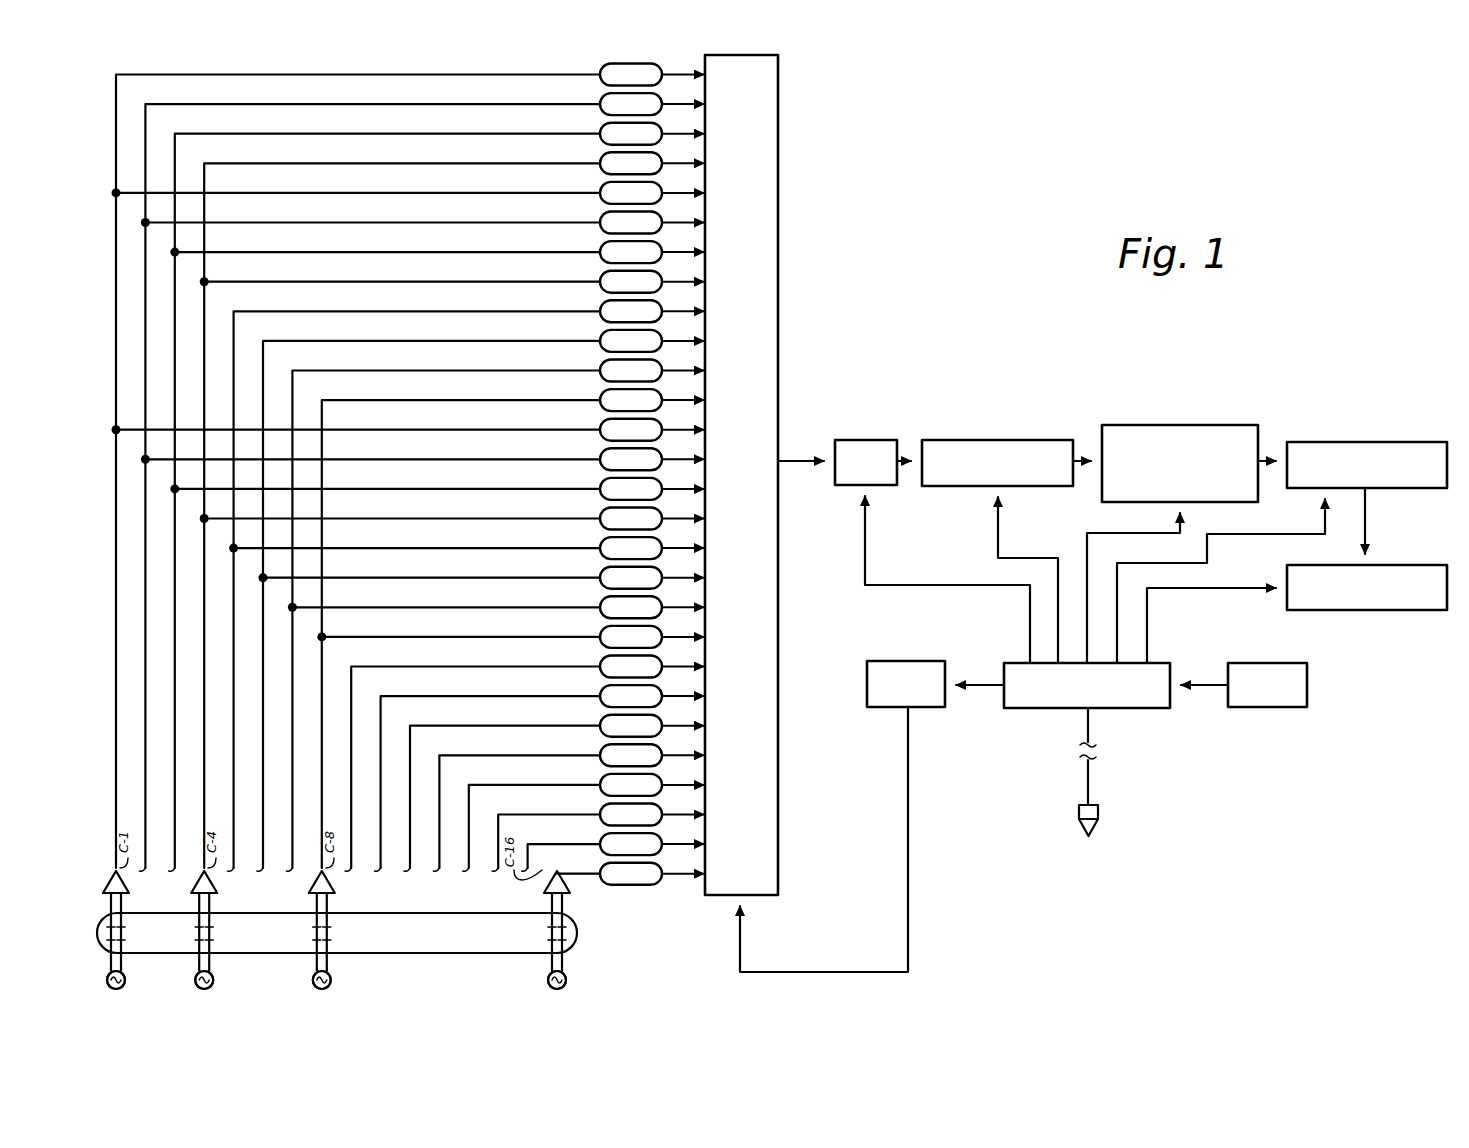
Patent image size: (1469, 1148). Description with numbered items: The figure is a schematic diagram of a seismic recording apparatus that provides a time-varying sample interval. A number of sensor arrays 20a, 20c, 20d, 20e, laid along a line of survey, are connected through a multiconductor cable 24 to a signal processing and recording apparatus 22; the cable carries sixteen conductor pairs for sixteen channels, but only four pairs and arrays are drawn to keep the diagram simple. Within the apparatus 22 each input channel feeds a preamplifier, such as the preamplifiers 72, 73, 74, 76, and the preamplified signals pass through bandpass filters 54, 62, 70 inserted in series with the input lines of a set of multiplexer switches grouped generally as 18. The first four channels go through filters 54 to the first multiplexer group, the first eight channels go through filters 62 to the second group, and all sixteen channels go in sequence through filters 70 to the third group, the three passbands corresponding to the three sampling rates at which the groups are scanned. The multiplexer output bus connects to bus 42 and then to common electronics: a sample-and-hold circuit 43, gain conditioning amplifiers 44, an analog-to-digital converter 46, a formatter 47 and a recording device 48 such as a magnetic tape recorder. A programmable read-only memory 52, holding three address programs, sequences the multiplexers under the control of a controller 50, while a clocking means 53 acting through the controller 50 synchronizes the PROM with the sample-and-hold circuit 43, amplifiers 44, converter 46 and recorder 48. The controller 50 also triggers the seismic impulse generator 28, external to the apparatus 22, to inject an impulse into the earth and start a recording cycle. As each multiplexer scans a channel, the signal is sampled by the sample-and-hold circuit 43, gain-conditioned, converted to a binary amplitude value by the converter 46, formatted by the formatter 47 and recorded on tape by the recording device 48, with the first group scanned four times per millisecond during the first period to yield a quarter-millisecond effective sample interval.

The multiplexer switches 18 is at (778, 60).
The bandpass filter 54 is at (600, 70).
The bandpass filter 62 is at (600, 189).
The bandpass filter 70 is at (600, 426).
The signal processing and recording apparatus 22 is at (921, 327).
The bus 42 is at (808, 456).
The sample-and-hold circuit 43 is at (865, 439).
The gain conditioning amplifiers 44 is at (983, 439).
The analog-to-digital converter 46 is at (1174, 424).
The formatter 47 is at (1360, 441).
The recording device 48 is at (1402, 610).
The controller 50 is at (1040, 708).
The programmable read-only memory 52 is at (880, 707).
The clocking means 53 is at (1250, 707).
The seismic impulse generator 28 is at (1099, 812).
The preamplifier 72 is at (130, 882).
The preamplifier 73 is at (218, 882).
The preamplifier 74 is at (336, 882).
The preamplifier 76 is at (571, 885).
The multiconductor cable 24 is at (577, 932).
The sensor array 20a is at (125, 981).
The sensor array 20c is at (213, 981).
The sensor array 20d is at (331, 981).
The sensor array 20e is at (566, 981).